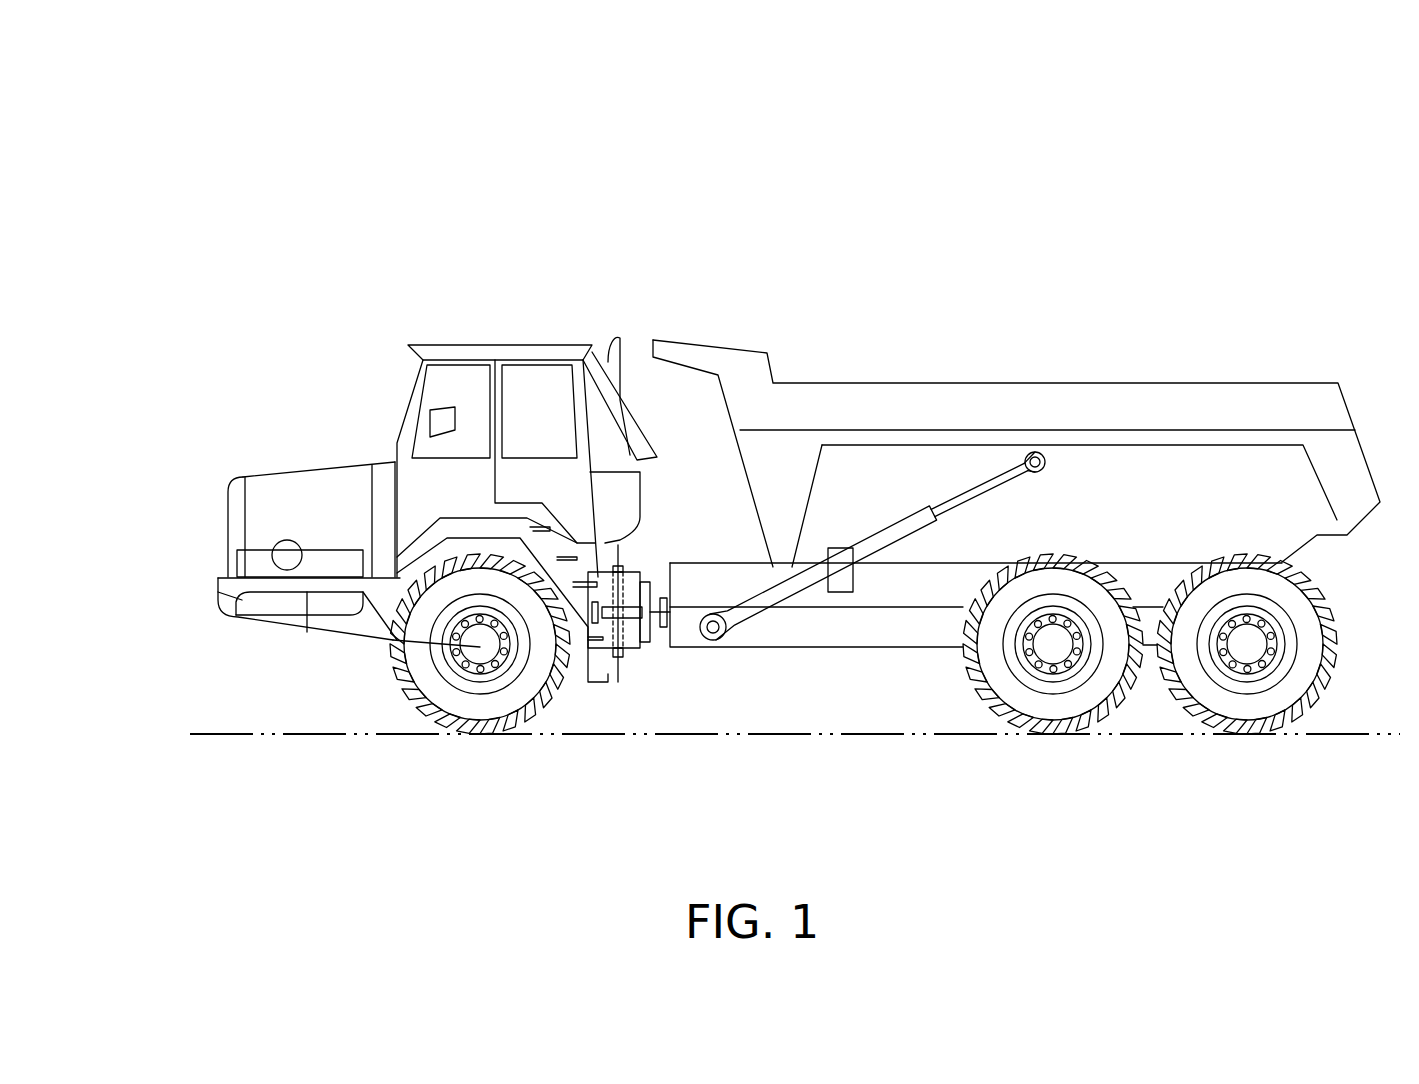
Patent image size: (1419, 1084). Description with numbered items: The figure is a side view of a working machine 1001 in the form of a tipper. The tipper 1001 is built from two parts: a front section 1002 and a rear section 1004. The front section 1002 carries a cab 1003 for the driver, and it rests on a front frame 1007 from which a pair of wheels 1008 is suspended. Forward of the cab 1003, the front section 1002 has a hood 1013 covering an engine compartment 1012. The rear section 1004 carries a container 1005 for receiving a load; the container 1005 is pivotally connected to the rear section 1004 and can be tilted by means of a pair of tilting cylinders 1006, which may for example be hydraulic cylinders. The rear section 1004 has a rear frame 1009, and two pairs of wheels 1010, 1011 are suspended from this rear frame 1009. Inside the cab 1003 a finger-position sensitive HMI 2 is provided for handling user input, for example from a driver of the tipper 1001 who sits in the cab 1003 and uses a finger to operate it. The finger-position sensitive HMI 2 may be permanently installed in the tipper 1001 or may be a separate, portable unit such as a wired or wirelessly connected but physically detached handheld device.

The working machine 1001 is at (850, 166).
The front section 1002 is at (457, 300).
The cab 1003 is at (520, 352).
The finger-position sensitive HMI 2 is at (440, 418).
The rear section 1004 is at (1152, 326).
The container 1005 is at (968, 407).
The tilting cylinders 1006 is at (795, 632).
The front frame 1007 is at (330, 622).
The wheels 1008 is at (423, 680).
The rear frame 1009 is at (788, 592).
The wheels 1010 is at (1108, 682).
The wheels 1011 is at (1300, 683).
The engine compartment 1012 is at (258, 520).
The hood 1013 is at (263, 450).